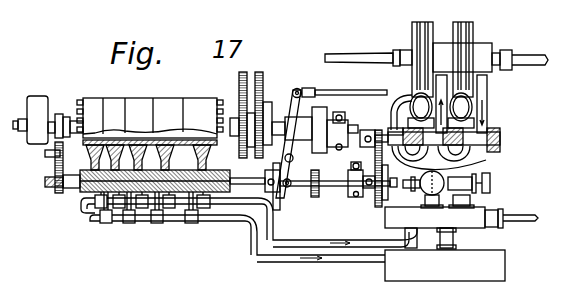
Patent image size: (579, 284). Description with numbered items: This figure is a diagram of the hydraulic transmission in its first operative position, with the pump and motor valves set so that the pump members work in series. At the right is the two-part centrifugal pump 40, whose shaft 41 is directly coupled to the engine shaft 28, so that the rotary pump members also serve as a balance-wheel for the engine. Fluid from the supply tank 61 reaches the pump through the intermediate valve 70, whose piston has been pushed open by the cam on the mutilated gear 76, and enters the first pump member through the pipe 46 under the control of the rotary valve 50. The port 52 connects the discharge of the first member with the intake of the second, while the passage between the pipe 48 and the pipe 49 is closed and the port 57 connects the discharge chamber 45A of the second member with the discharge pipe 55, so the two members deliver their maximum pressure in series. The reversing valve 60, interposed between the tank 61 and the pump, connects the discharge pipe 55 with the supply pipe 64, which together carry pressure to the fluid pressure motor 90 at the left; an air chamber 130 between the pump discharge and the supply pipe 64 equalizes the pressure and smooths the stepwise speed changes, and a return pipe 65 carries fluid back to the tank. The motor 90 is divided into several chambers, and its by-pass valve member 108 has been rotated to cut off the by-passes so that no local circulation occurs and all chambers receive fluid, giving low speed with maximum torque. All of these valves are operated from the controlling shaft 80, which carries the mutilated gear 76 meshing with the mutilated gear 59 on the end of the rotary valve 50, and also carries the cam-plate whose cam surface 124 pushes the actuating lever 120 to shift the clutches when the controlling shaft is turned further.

The fluid pressure motor 90 is at (92, 90).
The by-pass valve cylinder 108 is at (78, 186).
The actuating lever 120 is at (297, 89).
The cam surface 124 is at (281, 200).
The controlling shaft 80 is at (338, 188).
The mutilated gear 76 is at (365, 198).
The air chamber 130 is at (395, 202).
The port 57 is at (372, 150).
The pump shaft 41 is at (360, 62).
The two-part centrifugal pump 40 is at (474, 50).
The engine shaft 28 is at (530, 60).
The discharge chamber 45A is at (412, 100).
The pipe 48 is at (398, 112).
The mutilated gear 59 is at (392, 128).
The pipe 46 is at (482, 100).
The rotary valve 50 is at (500, 136).
The port 52 is at (486, 152).
The pipe 49 is at (426, 174).
The discharge pipe 55 is at (426, 188).
The intermediate valve 70 is at (492, 180).
The reversing valve 60 is at (490, 209).
The supply tank 61 is at (487, 264).
The supply pipe 64 is at (300, 243).
The return pipe 65 is at (285, 260).